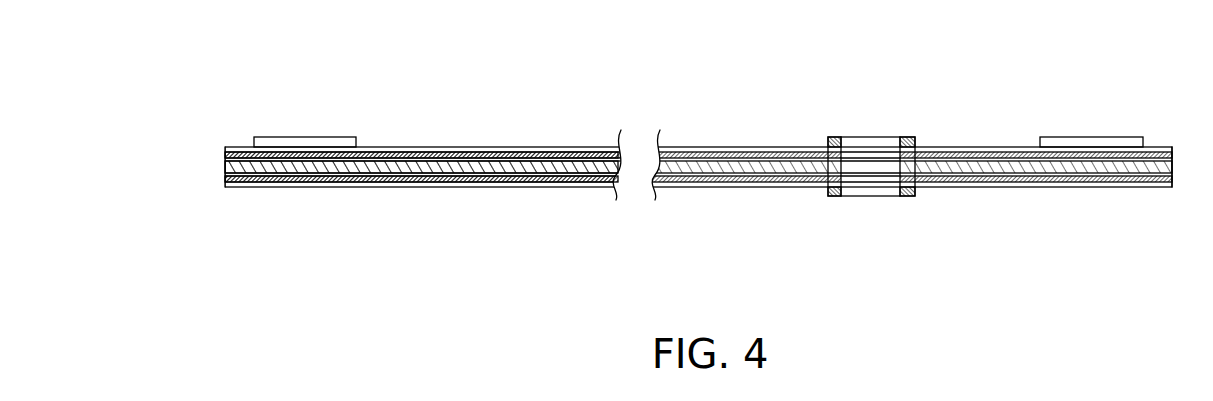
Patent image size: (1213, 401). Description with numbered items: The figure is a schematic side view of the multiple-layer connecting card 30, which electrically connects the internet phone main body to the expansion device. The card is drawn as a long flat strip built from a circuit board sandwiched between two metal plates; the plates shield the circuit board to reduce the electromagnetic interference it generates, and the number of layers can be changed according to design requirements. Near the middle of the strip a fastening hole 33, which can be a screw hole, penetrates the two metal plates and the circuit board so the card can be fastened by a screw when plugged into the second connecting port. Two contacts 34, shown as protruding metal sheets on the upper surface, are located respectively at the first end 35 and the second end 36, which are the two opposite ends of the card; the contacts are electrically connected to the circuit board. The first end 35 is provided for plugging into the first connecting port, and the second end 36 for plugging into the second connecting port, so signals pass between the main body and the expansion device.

The multiple-layer connecting card 30 is at (222, 241).
The fastening hole 33 is at (876, 140).
The contacts 34 is at (296, 140).
The first end 35 is at (237, 130).
The second end 36 is at (1158, 130).